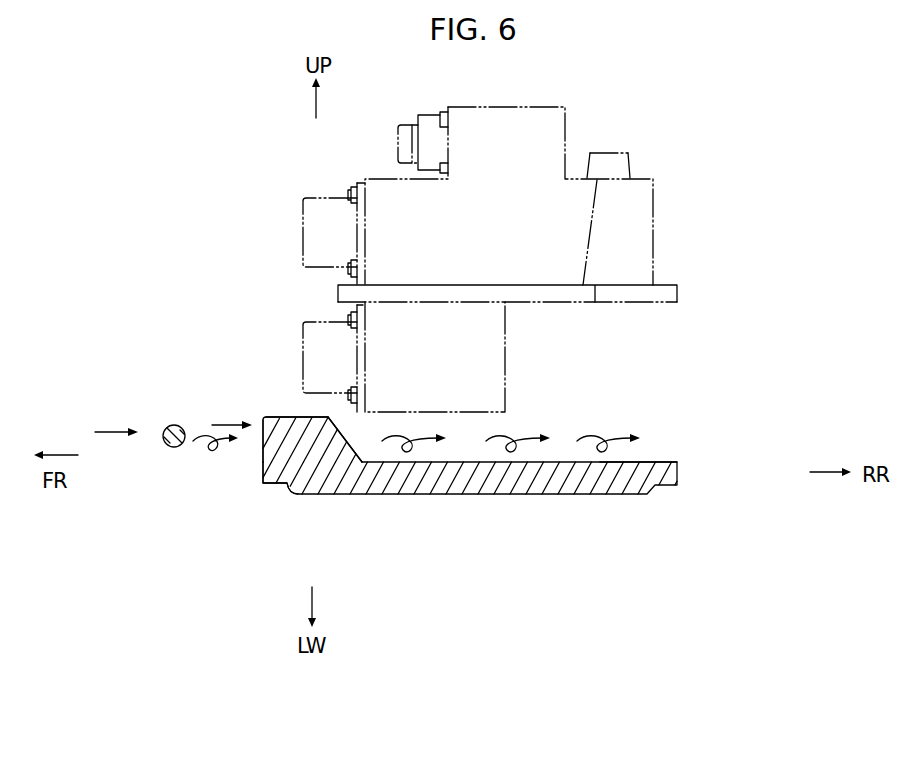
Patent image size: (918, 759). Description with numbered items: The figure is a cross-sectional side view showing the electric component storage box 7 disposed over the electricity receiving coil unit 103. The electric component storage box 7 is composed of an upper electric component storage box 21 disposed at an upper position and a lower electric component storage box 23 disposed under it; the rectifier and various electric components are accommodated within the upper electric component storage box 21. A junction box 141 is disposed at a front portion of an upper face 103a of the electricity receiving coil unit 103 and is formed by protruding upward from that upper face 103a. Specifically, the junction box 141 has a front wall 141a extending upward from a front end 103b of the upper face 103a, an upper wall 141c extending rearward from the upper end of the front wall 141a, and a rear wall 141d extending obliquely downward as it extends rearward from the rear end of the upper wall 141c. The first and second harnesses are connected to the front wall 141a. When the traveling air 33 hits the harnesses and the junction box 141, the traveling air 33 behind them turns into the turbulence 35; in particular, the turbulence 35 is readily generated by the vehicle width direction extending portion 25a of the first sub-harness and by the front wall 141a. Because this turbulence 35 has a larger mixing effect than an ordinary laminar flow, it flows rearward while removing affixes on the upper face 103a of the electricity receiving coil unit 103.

The electric component storage box 7 is at (524, 259).
The upper electric component storage box 21 is at (633, 210).
The lower electric component storage box 23 is at (487, 350).
The vehicle width direction extending portion 25a is at (170, 447).
The traveling air 33 is at (118, 428).
The turbulence 35 is at (193, 438).
The electricity receiving coil unit 103 is at (513, 495).
The upper face 103a is at (650, 462).
The front end 103b is at (263, 478).
The junction box 141 is at (300, 448).
The front wall 141a is at (262, 443).
The upper wall 141c is at (273, 415).
The rear wall 141d is at (346, 437).